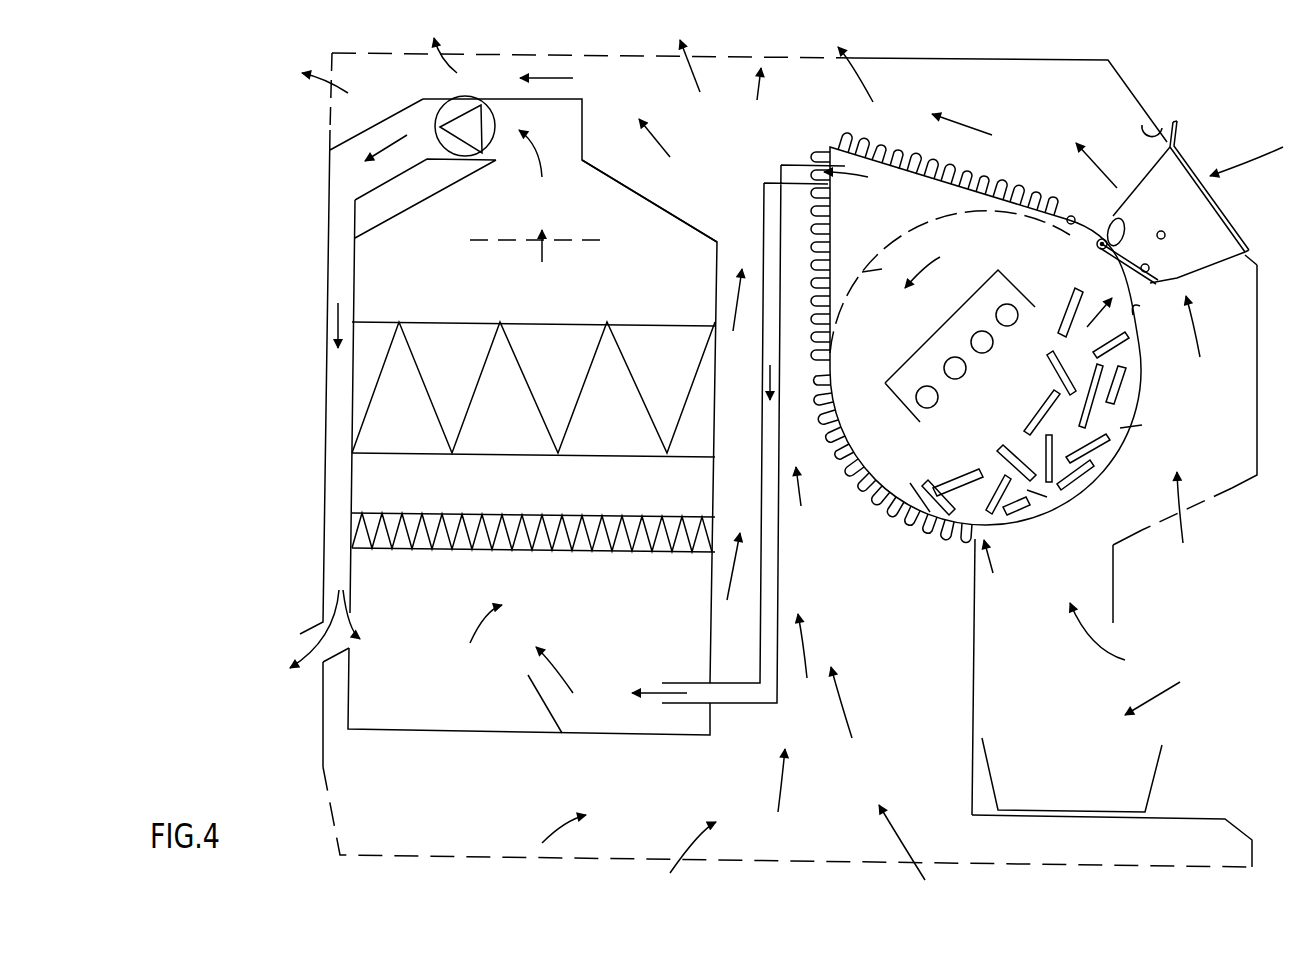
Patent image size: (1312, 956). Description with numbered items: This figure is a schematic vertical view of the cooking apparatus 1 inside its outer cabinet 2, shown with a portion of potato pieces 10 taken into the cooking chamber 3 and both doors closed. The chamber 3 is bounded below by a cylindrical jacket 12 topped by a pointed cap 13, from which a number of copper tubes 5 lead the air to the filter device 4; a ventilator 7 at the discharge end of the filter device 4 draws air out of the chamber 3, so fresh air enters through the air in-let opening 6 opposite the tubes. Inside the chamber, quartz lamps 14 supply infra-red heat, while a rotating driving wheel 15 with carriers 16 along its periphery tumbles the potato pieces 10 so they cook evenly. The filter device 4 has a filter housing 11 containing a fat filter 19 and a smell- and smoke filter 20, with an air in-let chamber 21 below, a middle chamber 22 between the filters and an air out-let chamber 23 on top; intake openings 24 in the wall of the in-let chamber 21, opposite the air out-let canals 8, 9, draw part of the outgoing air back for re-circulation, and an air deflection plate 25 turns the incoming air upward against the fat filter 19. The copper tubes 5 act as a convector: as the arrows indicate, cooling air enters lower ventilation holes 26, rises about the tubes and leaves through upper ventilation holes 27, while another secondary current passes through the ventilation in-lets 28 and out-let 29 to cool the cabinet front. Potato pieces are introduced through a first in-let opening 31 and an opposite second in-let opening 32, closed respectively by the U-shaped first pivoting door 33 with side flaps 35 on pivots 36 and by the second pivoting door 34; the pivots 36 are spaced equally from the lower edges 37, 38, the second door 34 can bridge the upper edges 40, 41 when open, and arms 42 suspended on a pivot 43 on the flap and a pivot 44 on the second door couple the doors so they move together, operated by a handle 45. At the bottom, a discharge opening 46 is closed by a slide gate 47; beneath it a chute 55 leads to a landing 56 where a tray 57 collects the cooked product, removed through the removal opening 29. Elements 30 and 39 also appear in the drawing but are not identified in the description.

The cooking apparatus 1 is at (818, 12).
The outer cabinet 2 is at (978, 55).
The cooking chamber 3 is at (941, 309).
The filter device 4 is at (633, 735).
The copper tubes 5 is at (768, 593).
The air in-let opening 6 is at (987, 527).
The ventilator 7 is at (466, 118).
The air out-let canal 8 is at (335, 423).
The air out-let canal 9 is at (308, 642).
The potato pieces 10 is at (1000, 448).
The filter housing 11 is at (630, 187).
The cylindrical jacket 12 is at (897, 515).
The pointed cap 13 is at (927, 180).
The quartz lamps 14 is at (958, 378).
The rotating driving wheel 15 is at (900, 238).
The carriers 16 is at (869, 275).
The fat filter 19 is at (412, 548).
The smell- and smoke filter 20 is at (412, 453).
The air in-let chamber 21 is at (619, 646).
The middle chamber 22 is at (624, 501).
The air out-let chamber 23 is at (552, 308).
The intake openings 24 is at (351, 649).
The air deflection plate 25 is at (537, 692).
The lower ventilation holes 26 is at (328, 797).
The upper ventilation holes 27 is at (700, 57).
The ventilation in-lets 28 is at (1218, 495).
The removal opening 29 is at (1171, 694).
The heating coil 30 is at (850, 138).
The first in-let opening 31 is at (1248, 148).
The second in-let opening 32 is at (1047, 357).
The first pivoting door 33 is at (1225, 243).
The second pivoting door 34 is at (1095, 290).
The side flaps 35 is at (1171, 187).
The pivots 36 is at (1167, 233).
The lower edge of in-let opening 37 is at (1243, 268).
The lower edge of in-let opening 38 is at (1133, 315).
The pivot 39 is at (1071, 215).
The upper edge of in-let opening 40 is at (1158, 128).
The upper edge of in-let opening 41 is at (960, 332).
The arms 42 is at (1109, 217).
The pivot 43 is at (1146, 273).
The pivot 44 is at (1098, 246).
The handle 45 is at (1180, 126).
The discharge opening 46 is at (1143, 432).
The slide gate 47 is at (1090, 485).
The chute 55 is at (1092, 587).
The landing 56 is at (1203, 815).
The tray 57 is at (1160, 768).